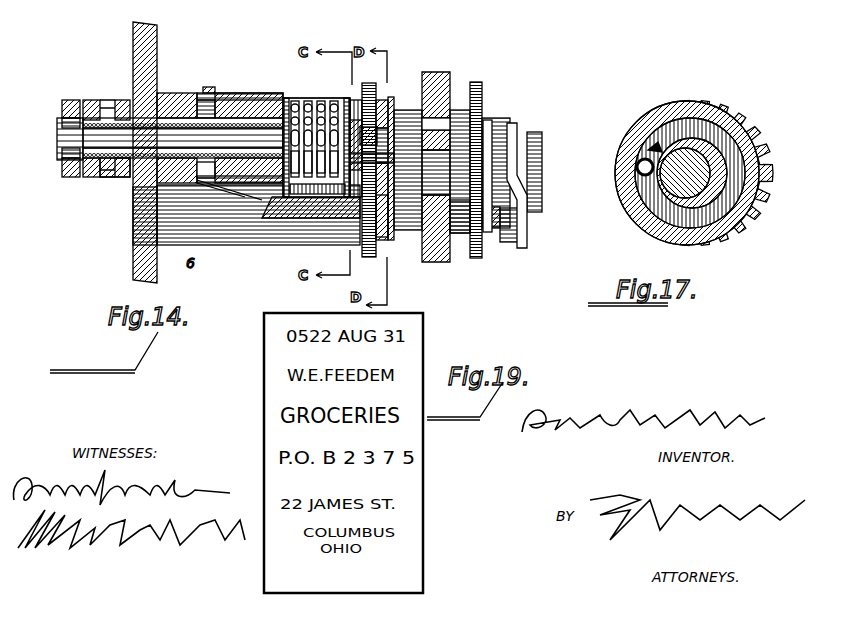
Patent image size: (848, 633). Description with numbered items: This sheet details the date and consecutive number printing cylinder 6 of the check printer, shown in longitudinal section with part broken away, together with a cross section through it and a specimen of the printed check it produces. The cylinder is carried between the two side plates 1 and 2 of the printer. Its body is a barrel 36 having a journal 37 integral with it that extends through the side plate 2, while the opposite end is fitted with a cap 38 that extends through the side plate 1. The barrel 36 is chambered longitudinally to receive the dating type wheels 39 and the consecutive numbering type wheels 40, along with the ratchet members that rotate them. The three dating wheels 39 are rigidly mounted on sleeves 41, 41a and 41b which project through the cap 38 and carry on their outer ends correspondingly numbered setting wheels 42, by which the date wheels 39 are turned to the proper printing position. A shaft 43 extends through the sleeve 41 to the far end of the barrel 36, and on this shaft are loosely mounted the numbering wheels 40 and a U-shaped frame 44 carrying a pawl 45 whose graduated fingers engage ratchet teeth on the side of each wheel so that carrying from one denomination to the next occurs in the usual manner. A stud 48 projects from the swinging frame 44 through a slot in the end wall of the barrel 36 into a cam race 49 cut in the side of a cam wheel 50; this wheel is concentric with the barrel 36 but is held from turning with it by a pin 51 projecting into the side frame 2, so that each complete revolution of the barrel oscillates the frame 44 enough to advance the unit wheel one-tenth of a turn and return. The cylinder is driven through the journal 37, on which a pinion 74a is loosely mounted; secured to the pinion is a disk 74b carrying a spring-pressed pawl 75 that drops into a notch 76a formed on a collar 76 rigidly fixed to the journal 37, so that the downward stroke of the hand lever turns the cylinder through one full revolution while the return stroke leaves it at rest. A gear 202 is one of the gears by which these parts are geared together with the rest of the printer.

In FIG. 14, the side plate 1 is at (140, 262).
In FIG. 14, the side plate 2 is at (437, 250).
In FIG. 17, the date and consecutive number printing cylinder 6 is at (702, 172).
In FIG. 14, the barrel 36 is at (245, 245).
In FIG. 14, the journal 37 is at (482, 171).
In FIG. 17, the journal 37 is at (720, 160).
In FIG. 14, the cap 38 is at (135, 224).
In FIG. 14, the dating type wheels 39 is at (238, 108).
In FIG. 14, the consecutive numbering type wheels 40 is at (320, 98).
In FIG. 14, the sleeve 41 is at (165, 93).
In FIG. 14, the sleeve 41a is at (187, 100).
In FIG. 14, the sleeve 41b is at (208, 87).
In FIG. 14, the setting wheels 42 is at (110, 100).
In FIG. 14, the shaft 43 is at (122, 166).
In FIG. 14, the U-shaped frame 44 is at (280, 200).
In FIG. 14, the pawl 45 is at (332, 200).
In FIG. 14, the stud 48 is at (386, 232).
In FIG. 17, the stud 48 is at (636, 170).
In FIG. 14, the cam race 49 is at (385, 100).
In FIG. 17, the cam race 49 is at (722, 128).
In FIG. 14, the cam wheel 50 is at (393, 100).
In FIG. 17, the cam wheel 50 is at (636, 150).
In FIG. 14, the pin 51 is at (436, 124).
In FIG. 14, the pinion 74a is at (458, 222).
In FIG. 14, the disk 74b is at (478, 100).
In FIG. 14, the spring-pressed pawl 75 is at (490, 228).
In FIG. 14, the collar 76 is at (500, 125).
In FIG. 14, the notch 76a is at (512, 150).
In FIG. 14, the gear 202 is at (370, 85).
In FIG. 17, the gear 202 is at (694, 98).